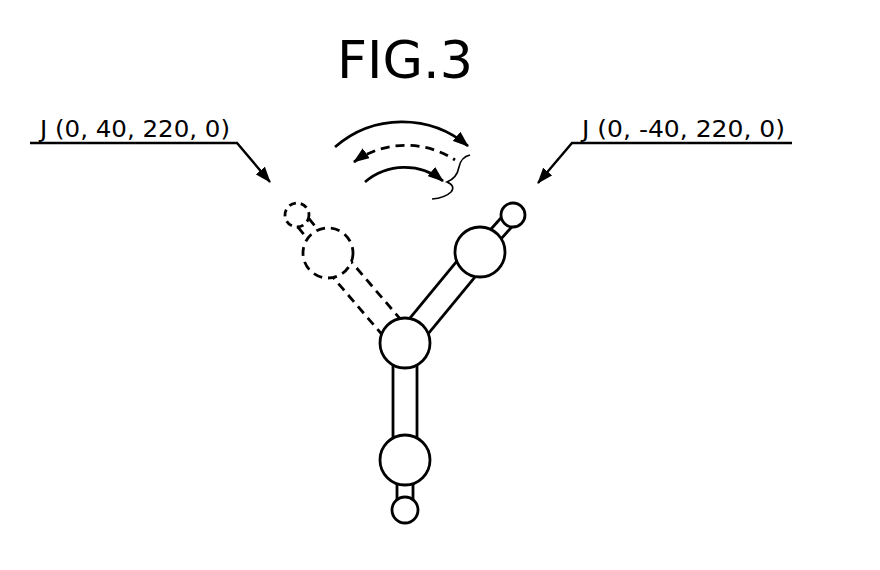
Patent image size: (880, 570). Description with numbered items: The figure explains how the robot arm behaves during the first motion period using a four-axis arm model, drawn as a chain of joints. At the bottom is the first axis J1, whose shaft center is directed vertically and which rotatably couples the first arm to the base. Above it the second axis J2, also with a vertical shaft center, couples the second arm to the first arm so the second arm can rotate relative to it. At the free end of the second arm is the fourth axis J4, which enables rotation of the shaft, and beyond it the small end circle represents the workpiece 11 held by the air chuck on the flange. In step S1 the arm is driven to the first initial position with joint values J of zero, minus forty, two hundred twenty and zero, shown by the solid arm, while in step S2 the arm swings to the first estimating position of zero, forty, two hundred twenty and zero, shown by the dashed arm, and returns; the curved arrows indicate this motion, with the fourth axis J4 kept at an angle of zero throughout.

The workpiece 11 is at (507, 216).
The fourth axis J4 is at (490, 262).
The second axis J2 is at (412, 343).
The first axis J1 is at (412, 457).
The first initial position driving step S1 is at (424, 149).
The first operation step S2 is at (427, 179).